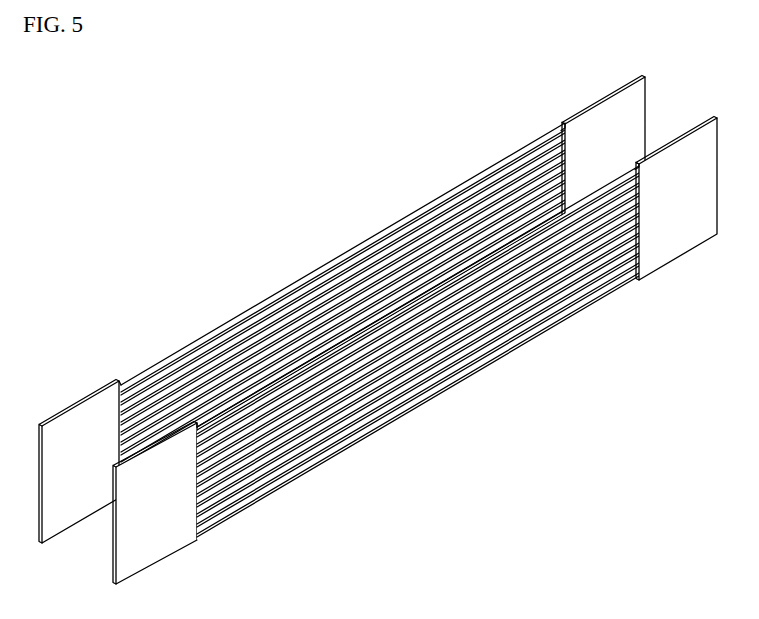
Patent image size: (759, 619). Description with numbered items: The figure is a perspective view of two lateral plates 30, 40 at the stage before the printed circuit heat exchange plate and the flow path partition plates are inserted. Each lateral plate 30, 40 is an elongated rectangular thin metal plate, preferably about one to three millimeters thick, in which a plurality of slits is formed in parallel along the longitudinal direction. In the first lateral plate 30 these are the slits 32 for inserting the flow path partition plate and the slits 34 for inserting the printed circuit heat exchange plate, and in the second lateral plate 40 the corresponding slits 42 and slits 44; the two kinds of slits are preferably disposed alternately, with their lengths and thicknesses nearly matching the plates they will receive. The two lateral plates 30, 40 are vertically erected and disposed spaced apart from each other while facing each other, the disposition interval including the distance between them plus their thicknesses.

The lateral plate 30 is at (83, 398).
The slit for inserting the flow path partition plate 32 is at (566, 127).
The slit for inserting the printed circuit heat exchange plate 34 is at (567, 142).
The lateral plate 40 is at (167, 558).
The slit for inserting the flow path partition plate 42 is at (642, 172).
The slit for inserting the printed circuit heat exchange plate 44 is at (641, 183).